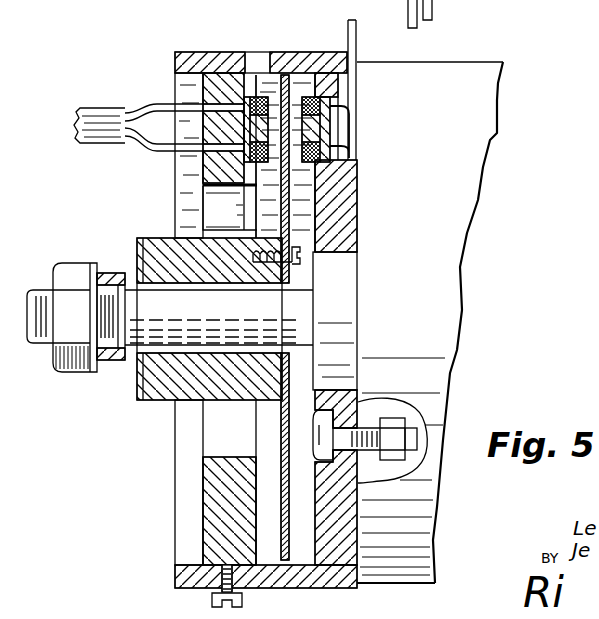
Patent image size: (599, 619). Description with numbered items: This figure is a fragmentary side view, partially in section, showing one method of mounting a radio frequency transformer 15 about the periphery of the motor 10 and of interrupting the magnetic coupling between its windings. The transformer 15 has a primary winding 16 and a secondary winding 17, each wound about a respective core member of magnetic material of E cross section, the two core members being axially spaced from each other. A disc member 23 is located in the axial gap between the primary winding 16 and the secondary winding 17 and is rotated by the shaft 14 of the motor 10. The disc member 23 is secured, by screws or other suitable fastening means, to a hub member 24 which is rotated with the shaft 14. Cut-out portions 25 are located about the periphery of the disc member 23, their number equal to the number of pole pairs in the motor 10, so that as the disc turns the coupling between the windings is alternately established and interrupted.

The motor 10 is at (486, 70).
The shaft 14 is at (137, 335).
The radio frequency transformer 15 is at (303, 90).
The primary winding 16 is at (252, 162).
The secondary winding 17 is at (317, 150).
The disc member 23 is at (283, 560).
The hub member 24 is at (160, 387).
The cut-out portion 25 is at (288, 157).